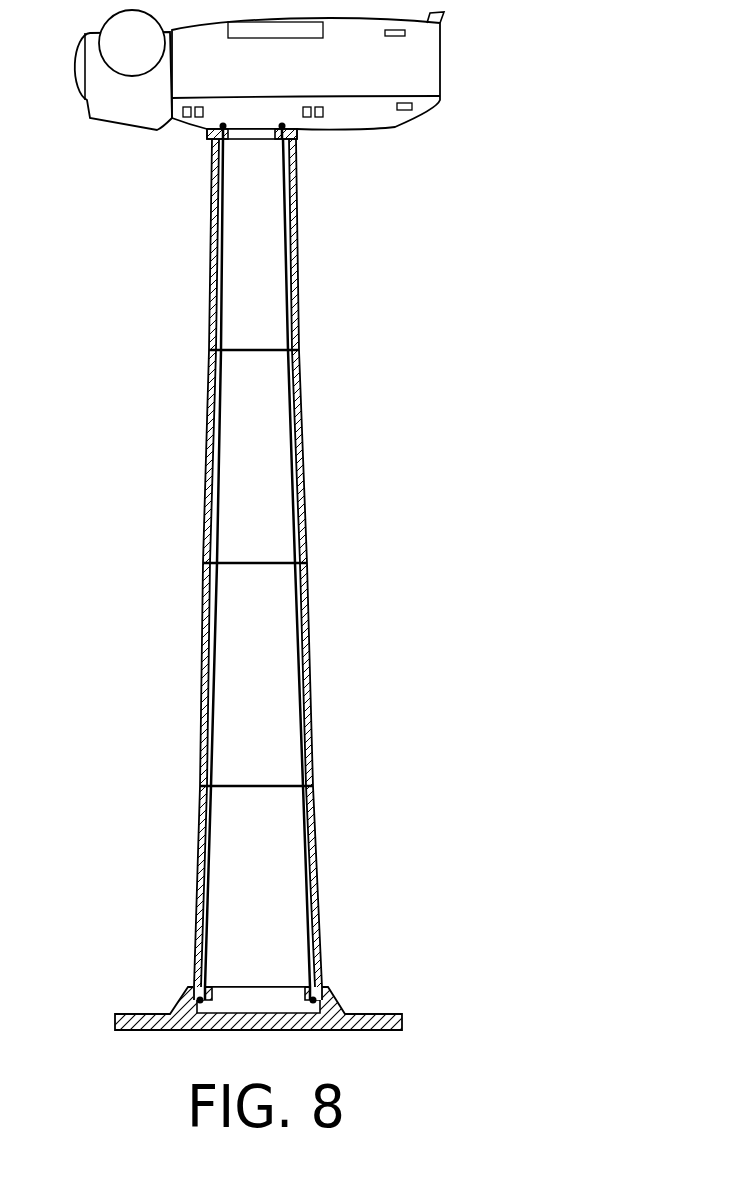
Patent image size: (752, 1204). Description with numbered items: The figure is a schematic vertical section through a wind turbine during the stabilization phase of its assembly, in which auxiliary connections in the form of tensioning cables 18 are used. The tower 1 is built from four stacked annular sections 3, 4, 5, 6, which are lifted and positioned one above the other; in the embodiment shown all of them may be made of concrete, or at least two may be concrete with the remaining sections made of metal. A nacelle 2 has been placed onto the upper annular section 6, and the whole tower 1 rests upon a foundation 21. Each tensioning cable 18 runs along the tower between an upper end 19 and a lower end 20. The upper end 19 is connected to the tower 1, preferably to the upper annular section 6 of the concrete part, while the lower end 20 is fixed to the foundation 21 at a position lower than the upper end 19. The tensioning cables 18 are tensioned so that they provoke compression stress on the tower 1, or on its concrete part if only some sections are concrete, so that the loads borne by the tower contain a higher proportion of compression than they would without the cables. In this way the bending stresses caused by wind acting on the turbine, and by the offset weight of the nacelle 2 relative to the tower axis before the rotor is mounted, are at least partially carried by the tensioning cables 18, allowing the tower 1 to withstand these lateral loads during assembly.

The tower 1 is at (239, 563).
The nacelle 2 is at (180, 142).
The annular section 3 is at (262, 912).
The annular section 4 is at (255, 680).
The annular section 5 is at (250, 434).
The upper annular section 6 is at (253, 293).
The tensioning cables 18 is at (297, 625).
The upper end 19 is at (215, 140).
The lower end 20 is at (198, 990).
The foundation 21 is at (395, 1013).